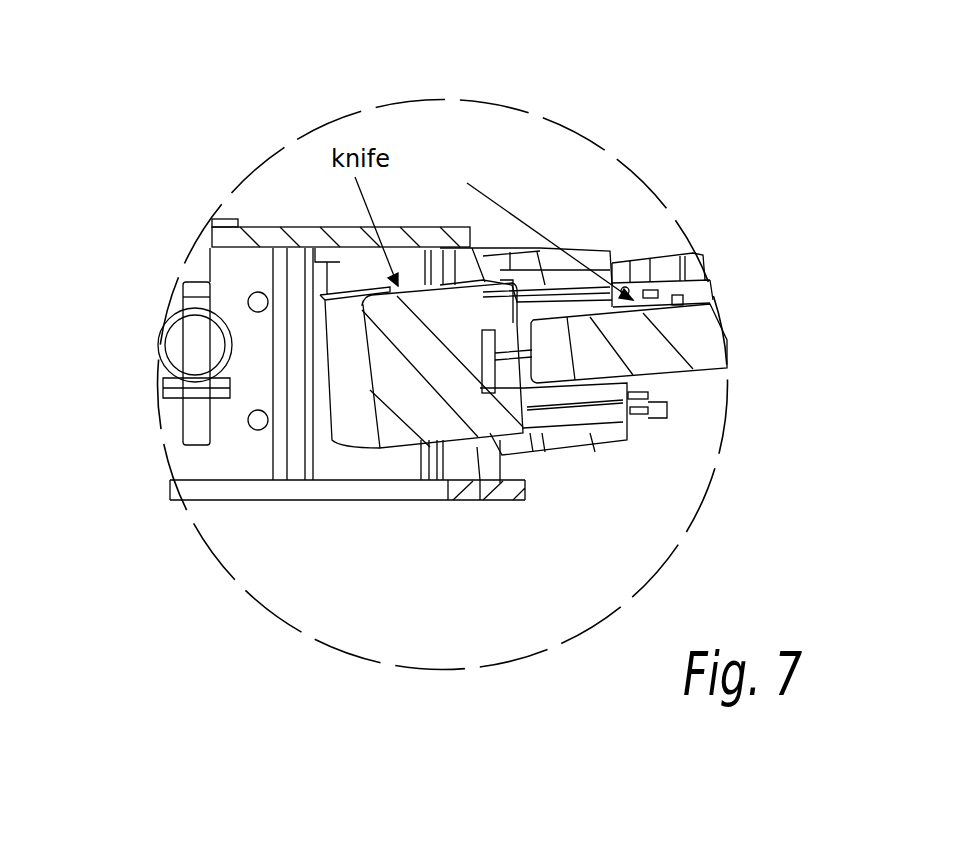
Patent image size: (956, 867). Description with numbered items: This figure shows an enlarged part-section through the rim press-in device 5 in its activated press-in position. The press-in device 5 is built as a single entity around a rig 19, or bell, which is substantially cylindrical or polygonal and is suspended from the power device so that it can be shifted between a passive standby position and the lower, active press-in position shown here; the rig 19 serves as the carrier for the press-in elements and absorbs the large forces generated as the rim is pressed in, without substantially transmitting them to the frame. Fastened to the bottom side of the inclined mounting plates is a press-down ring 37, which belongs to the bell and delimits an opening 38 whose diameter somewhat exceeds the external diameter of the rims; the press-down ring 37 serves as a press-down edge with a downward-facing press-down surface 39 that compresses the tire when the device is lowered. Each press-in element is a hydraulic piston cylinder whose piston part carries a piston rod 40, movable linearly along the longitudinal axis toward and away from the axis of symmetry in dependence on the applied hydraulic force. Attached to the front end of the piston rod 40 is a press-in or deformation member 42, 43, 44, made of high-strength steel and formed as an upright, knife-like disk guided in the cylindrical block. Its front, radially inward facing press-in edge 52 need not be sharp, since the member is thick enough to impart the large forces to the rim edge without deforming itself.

The rim press-in device 5 is at (473, 130).
The rig 19 is at (313, 220).
The press-down ring 37 is at (483, 500).
The opening 38 is at (413, 488).
The press-down surface 39 is at (510, 502).
The piston rod 40 is at (513, 352).
The press-in member 42 is at (453, 405).
The press-in member 43 is at (330, 323).
The press-in member 44 is at (197, 330).
The press-in edge 52 is at (320, 383).